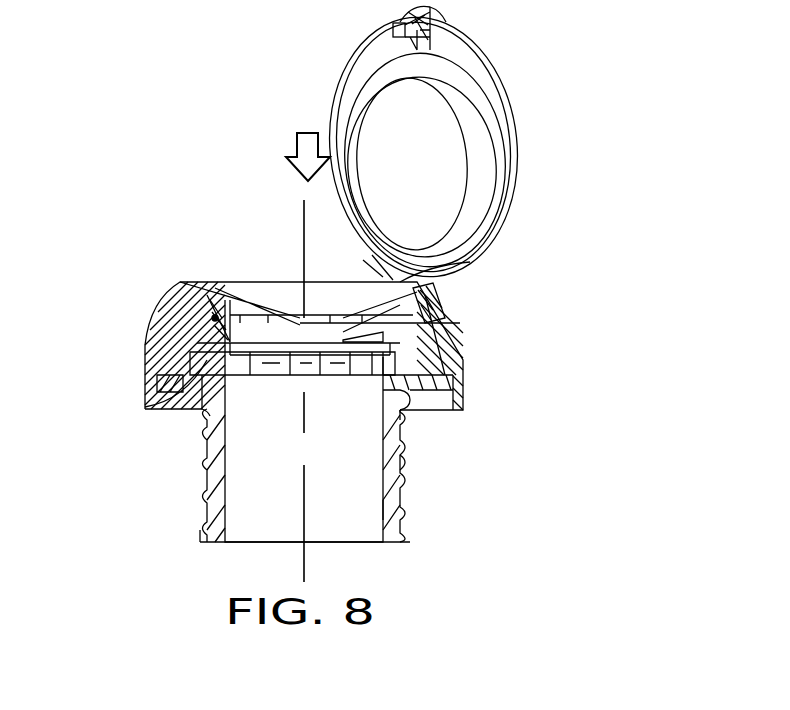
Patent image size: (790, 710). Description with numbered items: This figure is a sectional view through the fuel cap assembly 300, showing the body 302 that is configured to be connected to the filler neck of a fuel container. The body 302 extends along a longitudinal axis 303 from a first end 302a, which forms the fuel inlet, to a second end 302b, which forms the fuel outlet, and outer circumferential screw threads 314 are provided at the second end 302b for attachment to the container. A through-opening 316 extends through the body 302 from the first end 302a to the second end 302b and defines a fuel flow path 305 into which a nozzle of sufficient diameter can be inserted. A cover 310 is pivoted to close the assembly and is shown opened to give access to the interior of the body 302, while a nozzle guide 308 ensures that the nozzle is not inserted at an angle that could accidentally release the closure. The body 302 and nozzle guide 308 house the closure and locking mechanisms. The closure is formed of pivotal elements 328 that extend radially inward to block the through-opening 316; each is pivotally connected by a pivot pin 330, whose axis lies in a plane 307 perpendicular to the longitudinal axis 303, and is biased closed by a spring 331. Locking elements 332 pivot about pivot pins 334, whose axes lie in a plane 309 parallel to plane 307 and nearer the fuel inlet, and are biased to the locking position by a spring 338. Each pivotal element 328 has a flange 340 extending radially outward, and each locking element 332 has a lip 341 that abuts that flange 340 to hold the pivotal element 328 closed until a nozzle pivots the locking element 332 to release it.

The fuel cap assembly 300 is at (241, 82).
The body 302 is at (197, 490).
The first end 302a is at (176, 278).
The second end 302b is at (198, 538).
The longitudinal axis 303 is at (301, 246).
The fuel flow path 305 is at (296, 141).
The plane 307 is at (420, 363).
The nozzle guide 308 is at (210, 317).
The plane 309 is at (488, 313).
The cover 310 is at (516, 118).
The screw threads 314 is at (402, 473).
The through-opening 316 is at (352, 487).
The pivotal element 328 is at (190, 377).
The pivot pin 330 is at (238, 368).
The spring 331 is at (313, 382).
The locking element 332 is at (407, 328).
The pivot pin 334 is at (216, 316).
The spring 338 is at (440, 300).
The flange 340 is at (147, 408).
The lip 341 is at (197, 341).